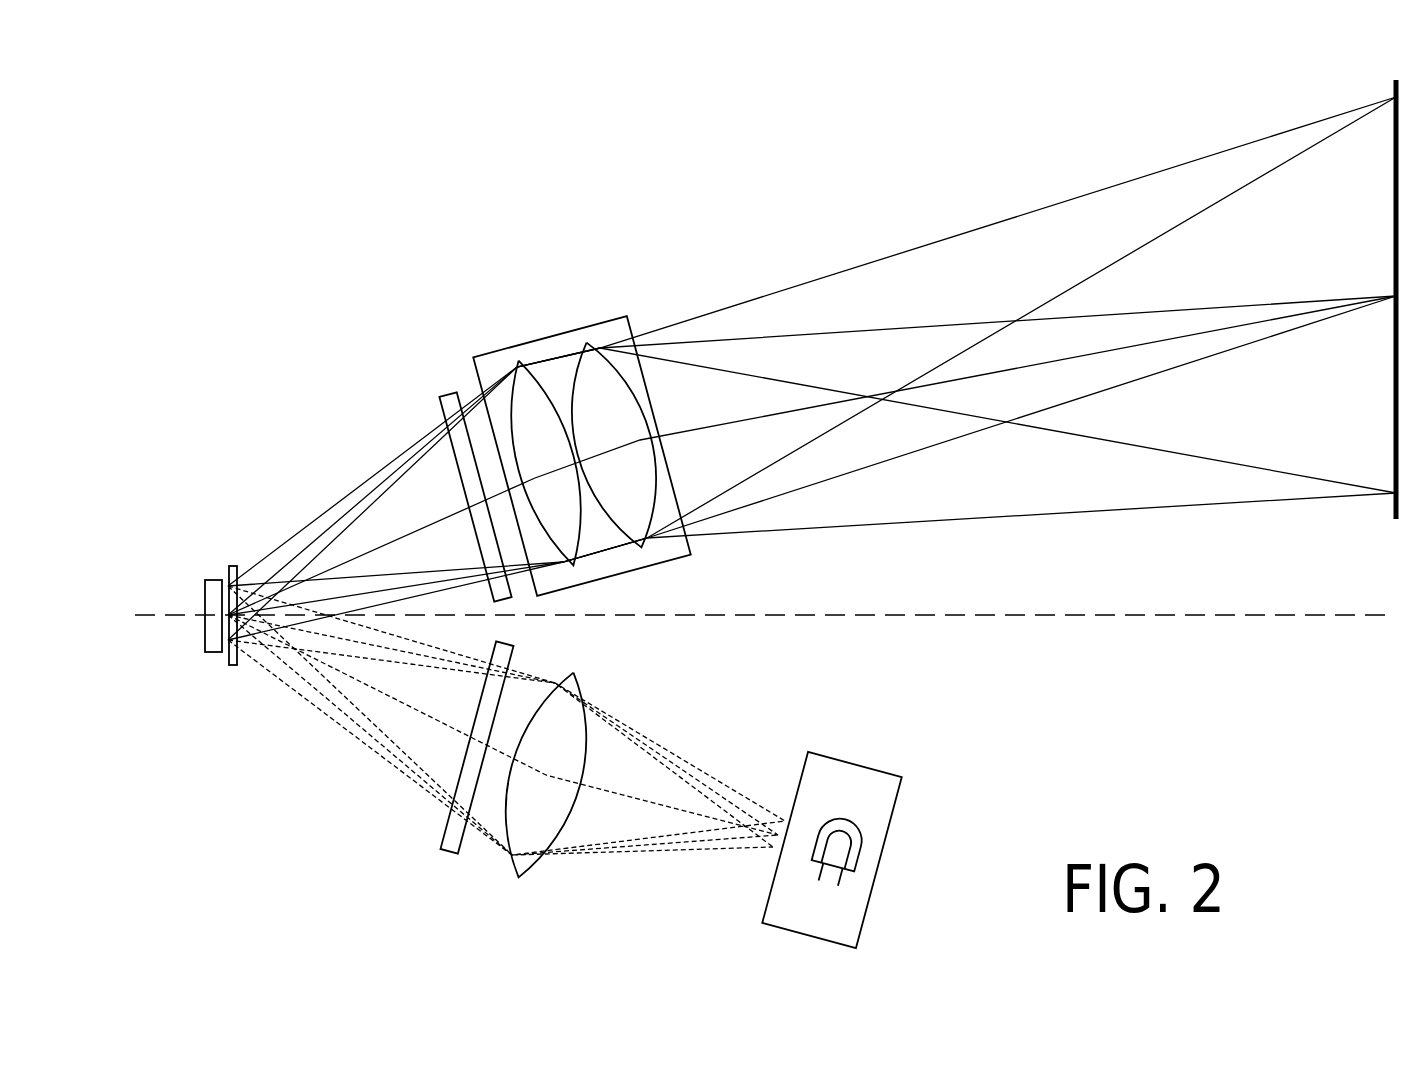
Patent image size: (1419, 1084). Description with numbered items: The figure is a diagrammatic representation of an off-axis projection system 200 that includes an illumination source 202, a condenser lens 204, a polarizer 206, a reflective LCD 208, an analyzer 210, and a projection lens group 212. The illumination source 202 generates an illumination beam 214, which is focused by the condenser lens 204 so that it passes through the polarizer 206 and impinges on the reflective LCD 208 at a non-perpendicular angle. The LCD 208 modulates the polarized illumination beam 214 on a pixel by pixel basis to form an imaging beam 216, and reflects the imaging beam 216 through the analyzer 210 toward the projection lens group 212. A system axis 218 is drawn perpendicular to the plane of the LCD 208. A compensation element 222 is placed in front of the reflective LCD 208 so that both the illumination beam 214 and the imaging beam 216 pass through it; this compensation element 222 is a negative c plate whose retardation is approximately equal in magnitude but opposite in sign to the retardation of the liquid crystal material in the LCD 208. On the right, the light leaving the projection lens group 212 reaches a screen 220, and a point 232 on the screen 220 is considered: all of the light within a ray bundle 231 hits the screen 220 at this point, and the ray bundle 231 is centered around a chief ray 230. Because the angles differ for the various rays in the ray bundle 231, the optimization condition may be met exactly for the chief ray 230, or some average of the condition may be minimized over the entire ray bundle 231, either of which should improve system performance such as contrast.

The off-axis projection system 200 is at (306, 194).
The illumination source 202 is at (852, 763).
The condenser lens 204 is at (508, 865).
The polarizer 206 is at (440, 843).
The reflective LCD 208 is at (205, 583).
The analyzer 210 is at (438, 398).
The projection lens group 212 is at (535, 340).
The illumination beam 214 is at (285, 687).
The imaging beam 216 is at (325, 517).
The system axis 218 is at (1088, 622).
The screen 220 is at (1396, 94).
The compensation element 222 is at (230, 660).
The chief ray 230 is at (750, 420).
The ray bundle 231 is at (868, 333).
The point on the screen 232 is at (1394, 298).